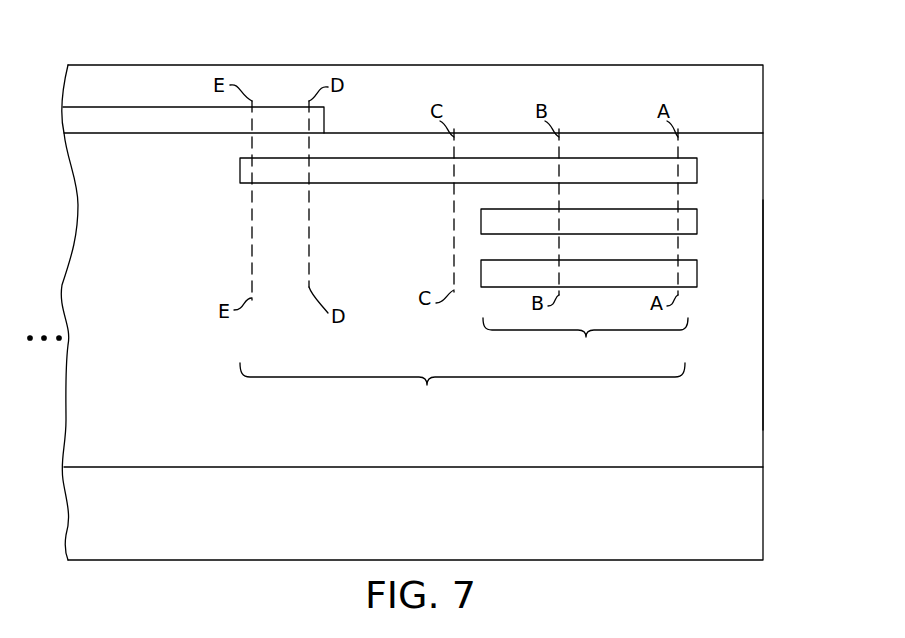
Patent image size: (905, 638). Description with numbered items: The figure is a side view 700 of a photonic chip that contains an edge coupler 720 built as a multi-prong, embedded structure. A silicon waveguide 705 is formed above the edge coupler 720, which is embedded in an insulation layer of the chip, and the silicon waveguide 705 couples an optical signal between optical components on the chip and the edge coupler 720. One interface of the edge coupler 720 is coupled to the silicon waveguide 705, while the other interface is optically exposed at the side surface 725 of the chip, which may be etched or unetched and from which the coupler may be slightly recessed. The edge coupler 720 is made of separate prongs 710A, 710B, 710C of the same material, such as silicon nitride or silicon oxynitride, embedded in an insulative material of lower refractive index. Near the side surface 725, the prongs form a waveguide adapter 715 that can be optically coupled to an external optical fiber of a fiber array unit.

The side view 700 is at (657, 53).
The silicon waveguide 705 is at (157, 107).
The prong 710A is at (240, 168).
The prong 710B is at (481, 215).
The prong 710C is at (481, 265).
The waveguide adapter 715 is at (585, 343).
The edge coupler 720 is at (462, 389).
The side surface 725 is at (764, 312).